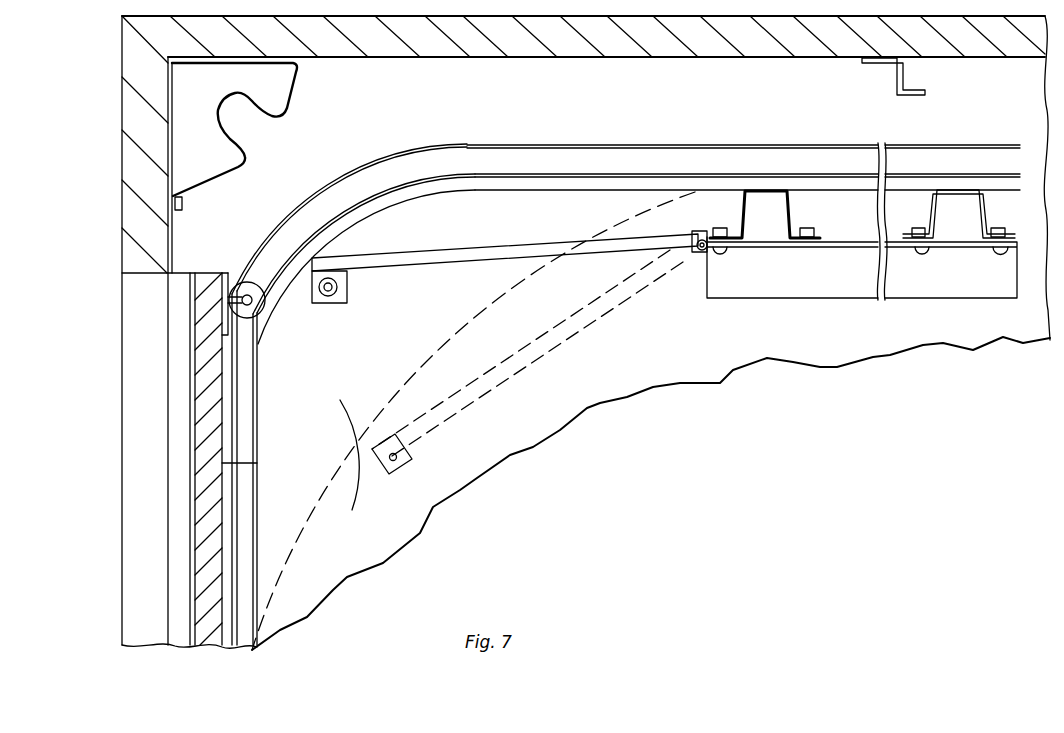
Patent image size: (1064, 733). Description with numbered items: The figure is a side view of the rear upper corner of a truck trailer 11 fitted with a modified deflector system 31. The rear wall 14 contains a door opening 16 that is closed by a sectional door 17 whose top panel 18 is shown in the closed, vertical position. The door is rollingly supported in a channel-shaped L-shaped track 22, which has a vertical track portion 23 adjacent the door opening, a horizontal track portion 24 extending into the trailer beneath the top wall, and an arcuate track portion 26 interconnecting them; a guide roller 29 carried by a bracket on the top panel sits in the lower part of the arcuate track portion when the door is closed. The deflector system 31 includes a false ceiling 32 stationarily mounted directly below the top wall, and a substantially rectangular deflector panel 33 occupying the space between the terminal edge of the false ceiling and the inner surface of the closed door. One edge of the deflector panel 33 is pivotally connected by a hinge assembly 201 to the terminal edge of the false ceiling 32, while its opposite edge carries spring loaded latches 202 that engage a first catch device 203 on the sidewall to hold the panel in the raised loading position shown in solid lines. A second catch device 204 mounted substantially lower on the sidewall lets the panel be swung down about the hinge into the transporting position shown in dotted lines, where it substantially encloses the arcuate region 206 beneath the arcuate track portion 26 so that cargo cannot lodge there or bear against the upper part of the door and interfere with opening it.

The truck trailer 11 is at (730, 388).
The rear wall 14 is at (135, 148).
The door opening 16 is at (130, 273).
The door 17 is at (180, 527).
The top panel 18 is at (207, 375).
The L-shaped track 22 is at (461, 135).
The vertical track portion 23 is at (243, 490).
The horizontal track portion 24 is at (800, 160).
The arcuate track portion 26 is at (360, 180).
The guide roller 29 is at (247, 317).
The deflector system 31 is at (558, 387).
The false ceiling 32 is at (844, 258).
The deflector panel 33 is at (433, 260).
The hinge assembly 201 is at (692, 258).
The spring loaded latch 202 is at (327, 300).
The first catch device 203 is at (346, 285).
The second catch device 204 is at (410, 452).
The arcuate region 206 is at (356, 471).